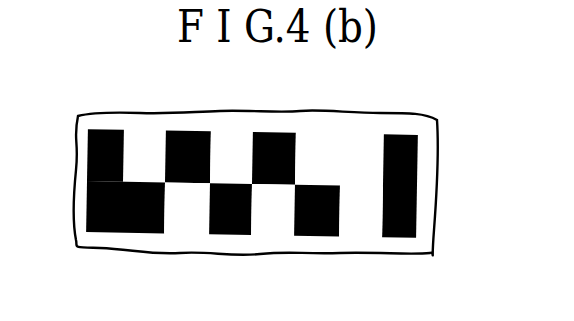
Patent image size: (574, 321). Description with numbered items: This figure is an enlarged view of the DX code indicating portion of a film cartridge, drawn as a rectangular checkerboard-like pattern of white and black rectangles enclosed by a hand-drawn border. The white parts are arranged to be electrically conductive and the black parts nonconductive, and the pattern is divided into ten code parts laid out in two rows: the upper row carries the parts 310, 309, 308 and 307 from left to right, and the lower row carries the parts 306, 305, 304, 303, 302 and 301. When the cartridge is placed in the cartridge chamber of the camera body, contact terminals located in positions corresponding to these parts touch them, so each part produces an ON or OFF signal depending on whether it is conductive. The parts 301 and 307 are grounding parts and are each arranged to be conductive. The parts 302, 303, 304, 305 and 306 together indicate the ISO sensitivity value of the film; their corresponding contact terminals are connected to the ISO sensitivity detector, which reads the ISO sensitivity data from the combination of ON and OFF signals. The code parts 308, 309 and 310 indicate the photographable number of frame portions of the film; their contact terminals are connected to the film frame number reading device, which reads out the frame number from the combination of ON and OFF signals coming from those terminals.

The grounding part 301 is at (364, 218).
The ISO sensitivity indicating part 302 is at (321, 235).
The ISO sensitivity indicating part 303 is at (274, 218).
The ISO sensitivity indicating part 304 is at (231, 235).
The ISO sensitivity indicating part 305 is at (188, 215).
The ISO sensitivity indicating part 306 is at (137, 233).
The grounding part 307 is at (365, 150).
The photographable frame number indicating code part 308 is at (323, 150).
The photographable frame number indicating code part 309 is at (277, 134).
The photographable frame number indicating code part 310 is at (228, 145).